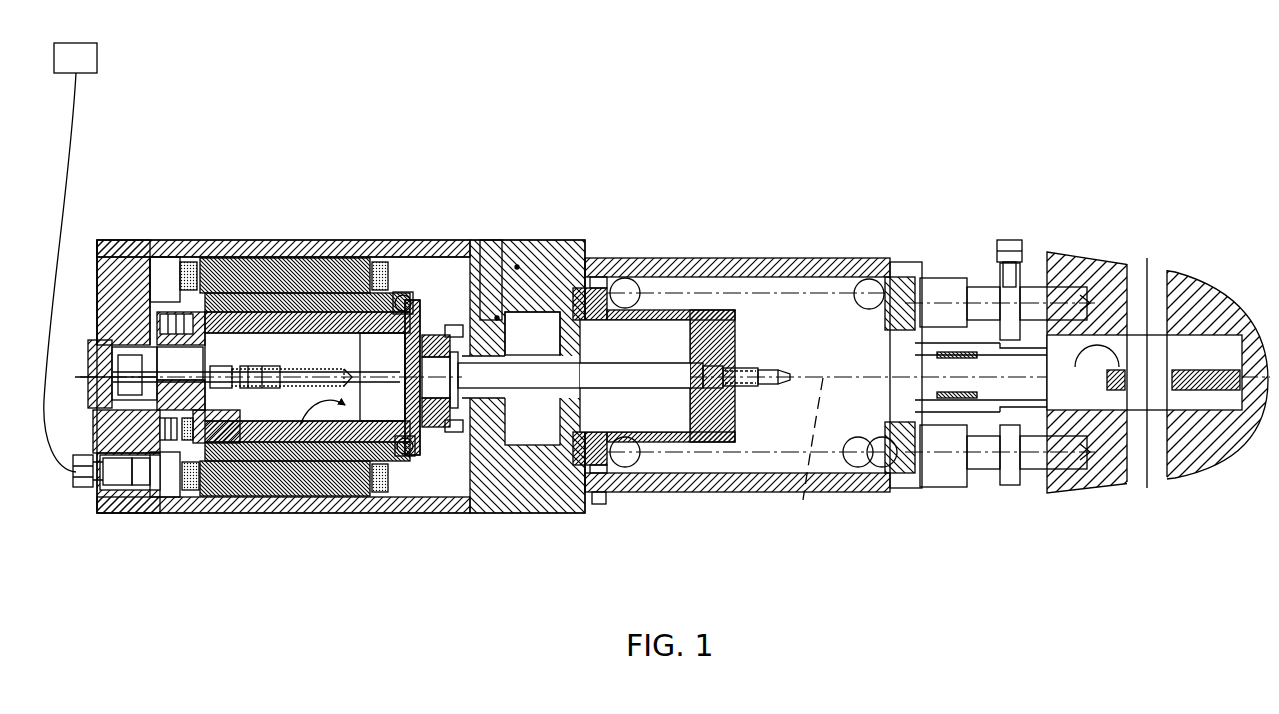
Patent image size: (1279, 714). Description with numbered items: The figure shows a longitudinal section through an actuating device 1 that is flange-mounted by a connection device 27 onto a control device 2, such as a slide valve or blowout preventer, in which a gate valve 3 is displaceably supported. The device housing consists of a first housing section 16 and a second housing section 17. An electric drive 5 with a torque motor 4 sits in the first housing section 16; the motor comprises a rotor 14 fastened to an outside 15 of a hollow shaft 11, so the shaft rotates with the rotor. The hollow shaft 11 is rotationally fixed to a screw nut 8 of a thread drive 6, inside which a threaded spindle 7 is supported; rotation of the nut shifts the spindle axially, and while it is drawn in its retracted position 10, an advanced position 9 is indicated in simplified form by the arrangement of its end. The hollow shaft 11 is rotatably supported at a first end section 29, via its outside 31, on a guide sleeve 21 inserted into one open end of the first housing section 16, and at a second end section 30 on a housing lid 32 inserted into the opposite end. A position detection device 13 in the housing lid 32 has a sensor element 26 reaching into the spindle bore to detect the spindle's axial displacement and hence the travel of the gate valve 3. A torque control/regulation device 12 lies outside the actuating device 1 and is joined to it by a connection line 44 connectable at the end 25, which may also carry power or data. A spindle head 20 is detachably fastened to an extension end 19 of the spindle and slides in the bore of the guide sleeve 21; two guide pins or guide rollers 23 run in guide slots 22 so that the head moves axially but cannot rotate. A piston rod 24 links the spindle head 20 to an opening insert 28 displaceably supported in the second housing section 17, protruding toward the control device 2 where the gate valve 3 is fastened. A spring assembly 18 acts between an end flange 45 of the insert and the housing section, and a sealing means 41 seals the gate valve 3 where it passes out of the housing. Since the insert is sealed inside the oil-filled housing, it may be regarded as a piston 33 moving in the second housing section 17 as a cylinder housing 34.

The actuating device 1 is at (346, 190).
The control device 2 is at (1147, 246).
The gate valve 3 is at (813, 462).
The torque motor 4 is at (339, 344).
The electric drive 5 is at (252, 239).
The thread drive 6 is at (222, 281).
The threaded spindle 7 is at (222, 281).
The screw nut 8 is at (405, 470).
The advanced position 9 is at (267, 357).
The retracted position 10 is at (232, 442).
The hollow shaft 11 is at (188, 458).
The torque control/regulation device 12 is at (97, 58).
The position detection device 13 is at (88, 472).
The rotor 14 is at (305, 398).
The outside of the hollow shaft 15 is at (360, 458).
The first housing section 16 is at (483, 224).
The second housing section 17 is at (723, 333).
The spring assembly 18 is at (861, 462).
The extension end 19 is at (404, 290).
The spindle head 20 is at (470, 420).
The guide sleeve 21 is at (517, 266).
The guide slots 22 is at (496, 316).
The guide pins or guide rollers 23 is at (462, 440).
The piston rod 24 is at (648, 382).
The end of the actuating device 25 is at (86, 281).
The sensor element 26 is at (248, 396).
The connection device 27 is at (981, 239).
The opening insert 28 is at (624, 455).
The first end section 29 is at (340, 412).
The second end section 30 is at (157, 512).
The outside of the hollow shaft 31 is at (303, 362).
The housing lid 32 is at (106, 312).
The piston 33 is at (723, 444).
The cylinder housing 34 is at (920, 224).
The sealing means 41 is at (962, 402).
The connection line 44 is at (79, 124).
The end flange 45 is at (600, 486).